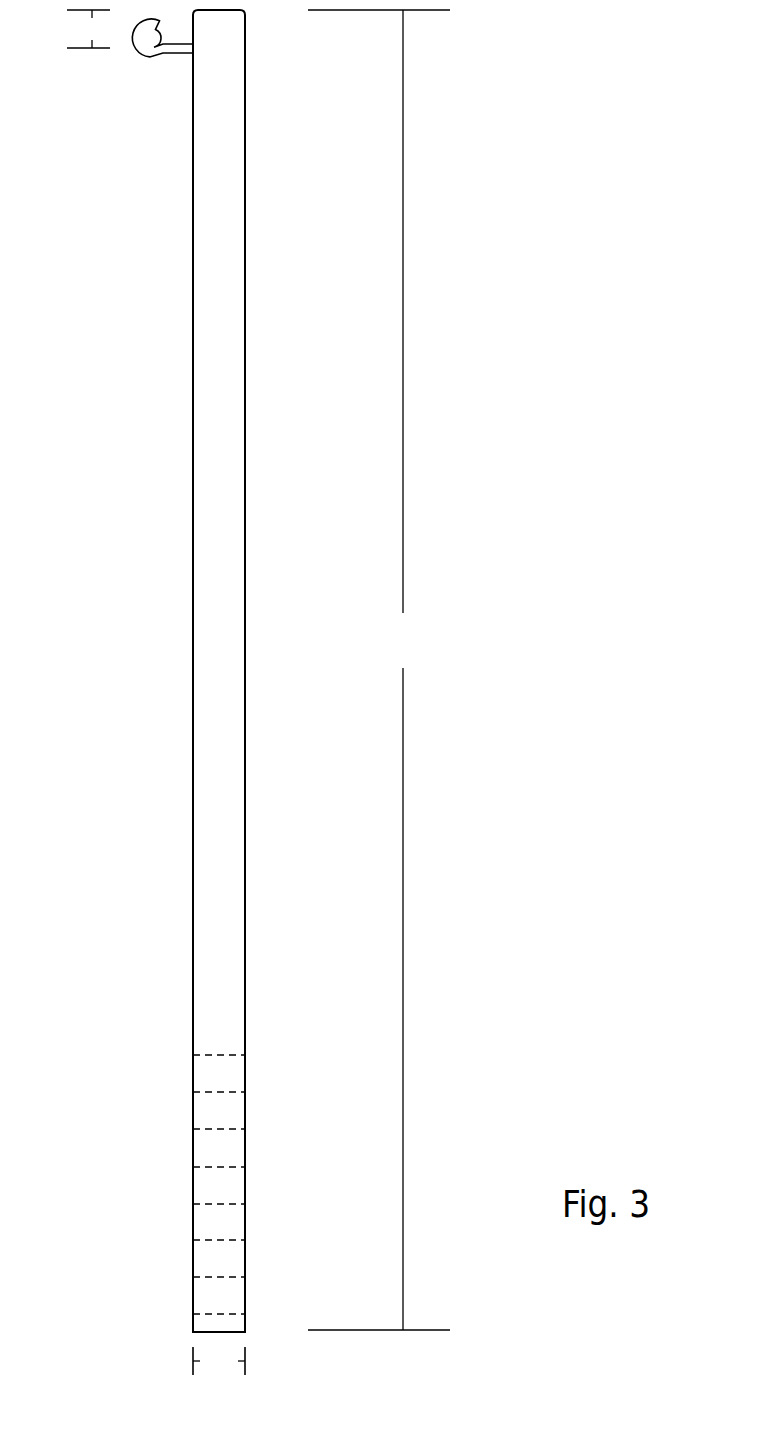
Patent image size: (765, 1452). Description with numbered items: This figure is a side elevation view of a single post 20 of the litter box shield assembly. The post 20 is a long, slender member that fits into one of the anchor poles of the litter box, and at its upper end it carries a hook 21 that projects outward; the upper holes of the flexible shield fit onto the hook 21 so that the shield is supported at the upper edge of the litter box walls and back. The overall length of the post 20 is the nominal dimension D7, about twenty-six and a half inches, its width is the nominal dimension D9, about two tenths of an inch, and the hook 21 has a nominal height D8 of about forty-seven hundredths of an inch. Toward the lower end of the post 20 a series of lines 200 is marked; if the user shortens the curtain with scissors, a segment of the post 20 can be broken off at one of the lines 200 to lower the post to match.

The post 20 is at (203, 748).
The hook 21 is at (153, 58).
The lines 200 is at (152, 1131).
The dimension d7 D7 is at (379, 670).
The dimension d8 D8 is at (88, 29).
The dimension d9 D9 is at (219, 1361).